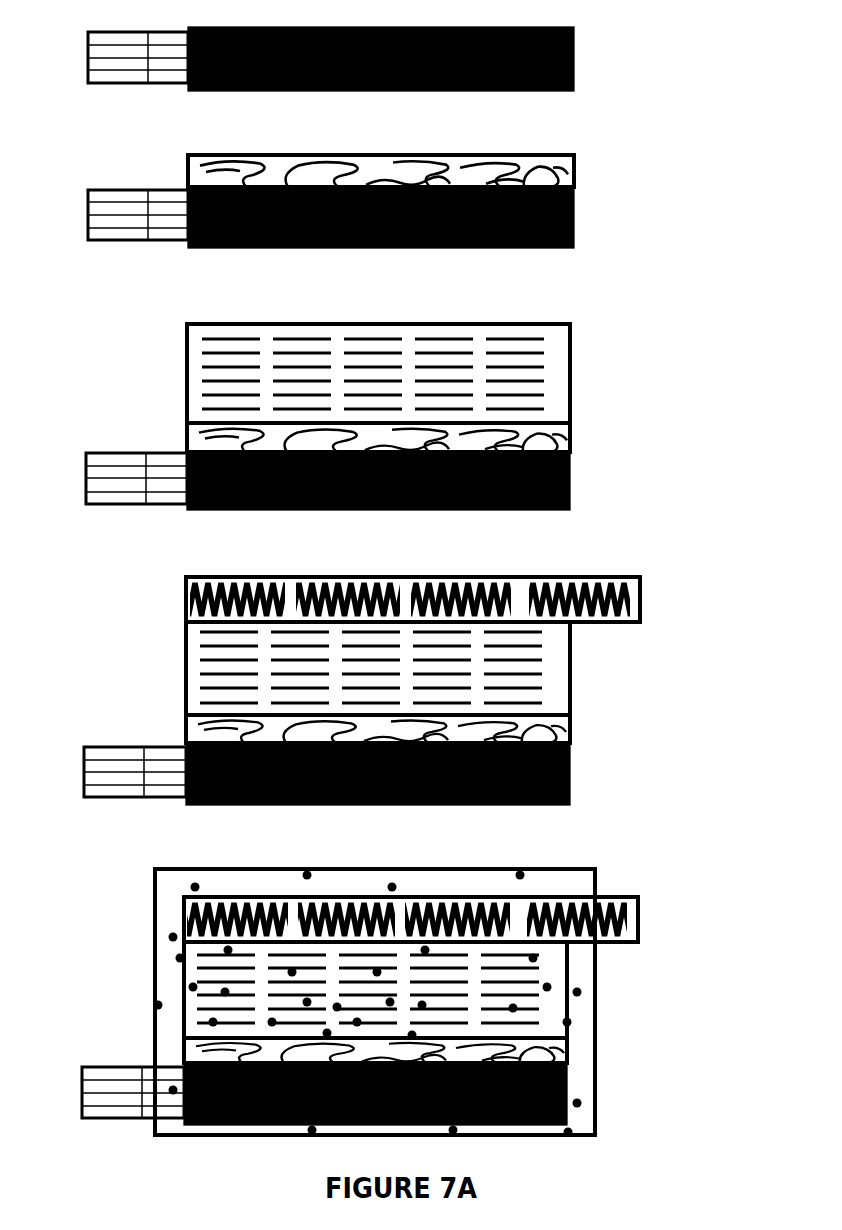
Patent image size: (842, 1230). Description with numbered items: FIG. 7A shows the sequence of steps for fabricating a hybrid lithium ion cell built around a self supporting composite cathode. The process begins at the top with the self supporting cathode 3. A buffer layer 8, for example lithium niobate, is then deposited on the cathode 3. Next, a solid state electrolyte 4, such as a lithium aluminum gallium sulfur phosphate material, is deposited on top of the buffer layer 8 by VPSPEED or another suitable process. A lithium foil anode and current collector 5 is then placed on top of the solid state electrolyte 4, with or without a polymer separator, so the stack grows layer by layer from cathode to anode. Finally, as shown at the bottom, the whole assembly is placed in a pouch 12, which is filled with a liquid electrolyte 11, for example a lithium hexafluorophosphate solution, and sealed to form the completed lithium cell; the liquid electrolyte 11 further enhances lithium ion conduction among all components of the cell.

The self supporting cathode 3 is at (574, 53).
The buffer layer 8 is at (590, 173).
The solid state electrolyte 4 is at (570, 372).
The lithium foil anode and current collector 5 is at (640, 603).
The liquid electrolyte 11 is at (580, 1010).
The pouch 12 is at (155, 911).